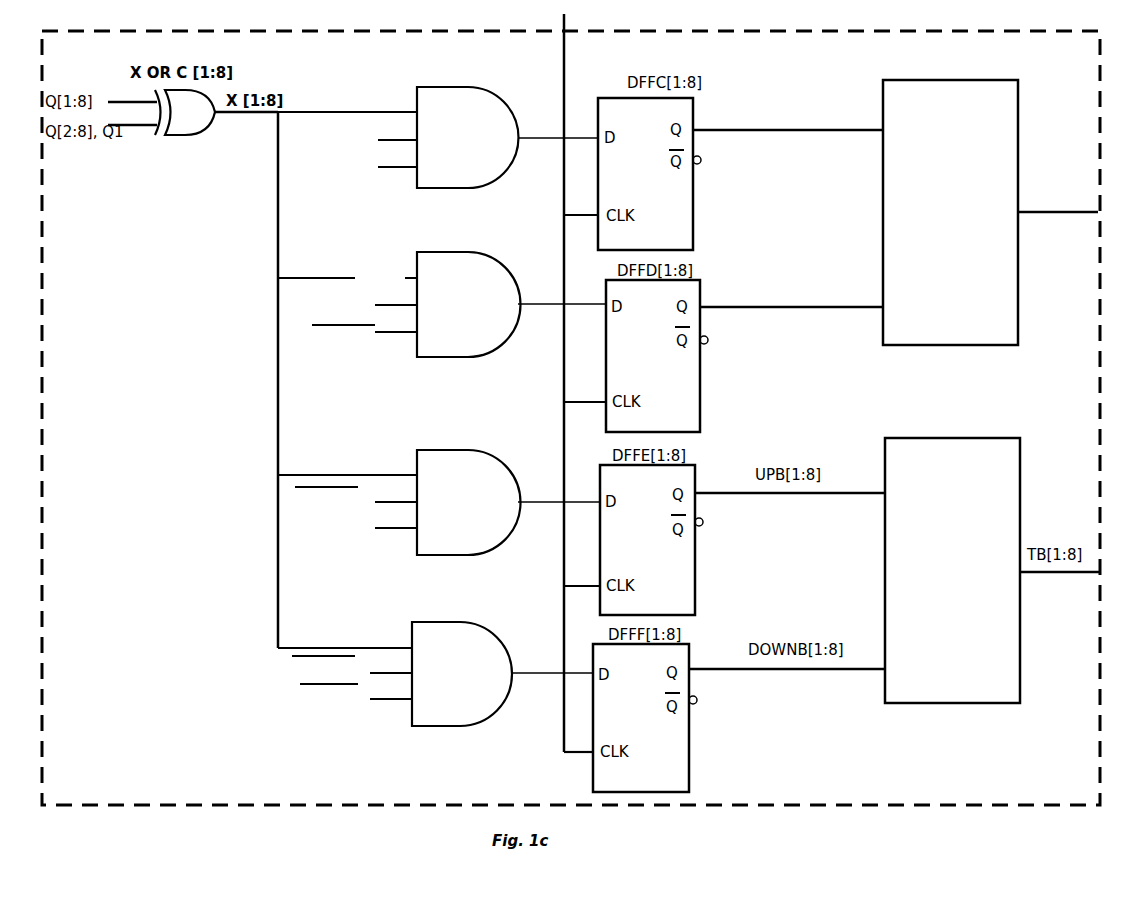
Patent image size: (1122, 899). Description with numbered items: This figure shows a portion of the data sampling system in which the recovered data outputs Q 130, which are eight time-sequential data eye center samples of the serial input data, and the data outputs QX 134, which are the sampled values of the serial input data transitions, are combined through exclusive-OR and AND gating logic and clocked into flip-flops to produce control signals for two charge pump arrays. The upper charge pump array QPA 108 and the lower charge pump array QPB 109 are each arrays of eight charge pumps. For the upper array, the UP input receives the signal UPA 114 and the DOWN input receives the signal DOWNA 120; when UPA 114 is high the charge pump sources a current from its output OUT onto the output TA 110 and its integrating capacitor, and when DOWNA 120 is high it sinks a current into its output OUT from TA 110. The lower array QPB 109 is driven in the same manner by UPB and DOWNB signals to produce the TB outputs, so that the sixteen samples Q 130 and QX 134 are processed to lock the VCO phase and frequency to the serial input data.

The recovered data outputs Q[1:8] 130 is at (45, 82).
The data outputs QX[1:8] 134 is at (312, 186).
The UPA[1] signal 114 is at (773, 106).
The DOWNA[1] signal 120 is at (790, 253).
The charge pump array QPA[1:8] 108 is at (952, 45).
The charge pump array QPB[1:8] 109 is at (962, 397).
The TA[1] output 110 is at (1075, 170).